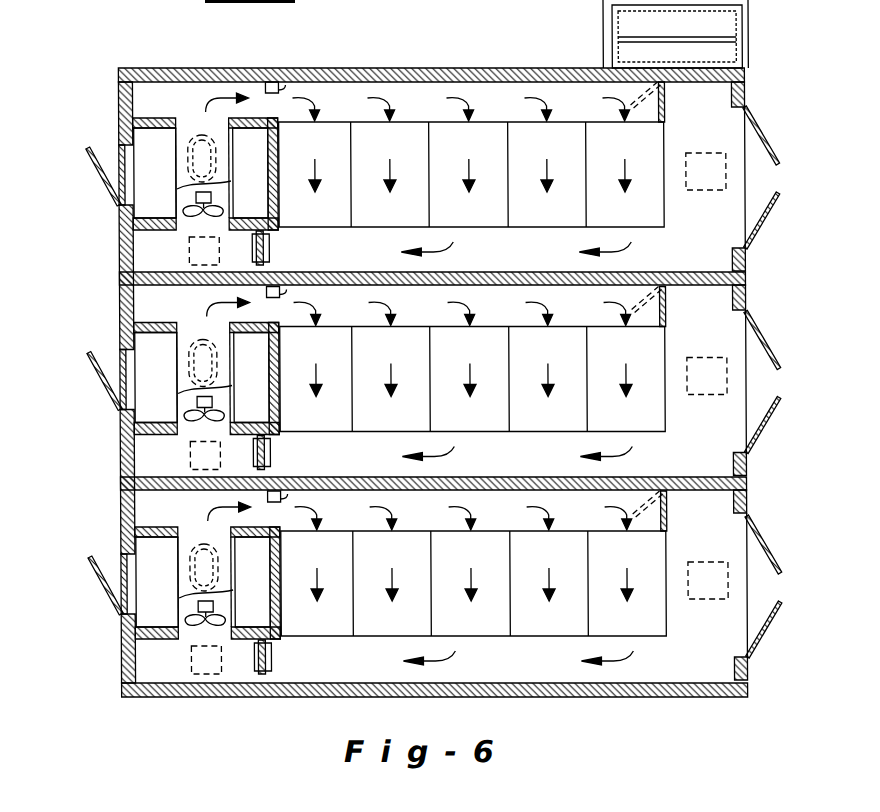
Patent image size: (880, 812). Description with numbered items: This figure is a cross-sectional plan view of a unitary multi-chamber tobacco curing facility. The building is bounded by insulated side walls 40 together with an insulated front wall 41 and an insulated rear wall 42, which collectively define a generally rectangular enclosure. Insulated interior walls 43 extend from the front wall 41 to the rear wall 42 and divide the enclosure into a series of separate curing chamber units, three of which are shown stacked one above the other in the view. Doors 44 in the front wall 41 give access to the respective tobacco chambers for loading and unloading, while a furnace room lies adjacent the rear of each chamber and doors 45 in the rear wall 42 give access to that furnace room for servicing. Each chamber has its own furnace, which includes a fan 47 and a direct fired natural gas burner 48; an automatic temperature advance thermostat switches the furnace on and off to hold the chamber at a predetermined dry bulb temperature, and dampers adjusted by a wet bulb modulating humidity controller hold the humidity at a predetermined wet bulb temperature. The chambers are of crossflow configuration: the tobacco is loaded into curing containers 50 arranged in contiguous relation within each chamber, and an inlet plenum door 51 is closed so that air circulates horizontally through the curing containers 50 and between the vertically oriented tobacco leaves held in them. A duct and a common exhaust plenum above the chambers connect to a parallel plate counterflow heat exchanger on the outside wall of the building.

The insulated side walls 40 is at (500, 68).
The front wall 41 is at (745, 290).
The rear wall 42 is at (120, 470).
The insulated interior walls 43 is at (510, 272).
The doors 44 is at (778, 213).
The doors 45 is at (96, 172).
The fan 47 is at (211, 196).
The direct fired natural gas burner 48 is at (216, 151).
The curing containers 50 is at (418, 220).
The inlet plenum door 51 is at (666, 106).